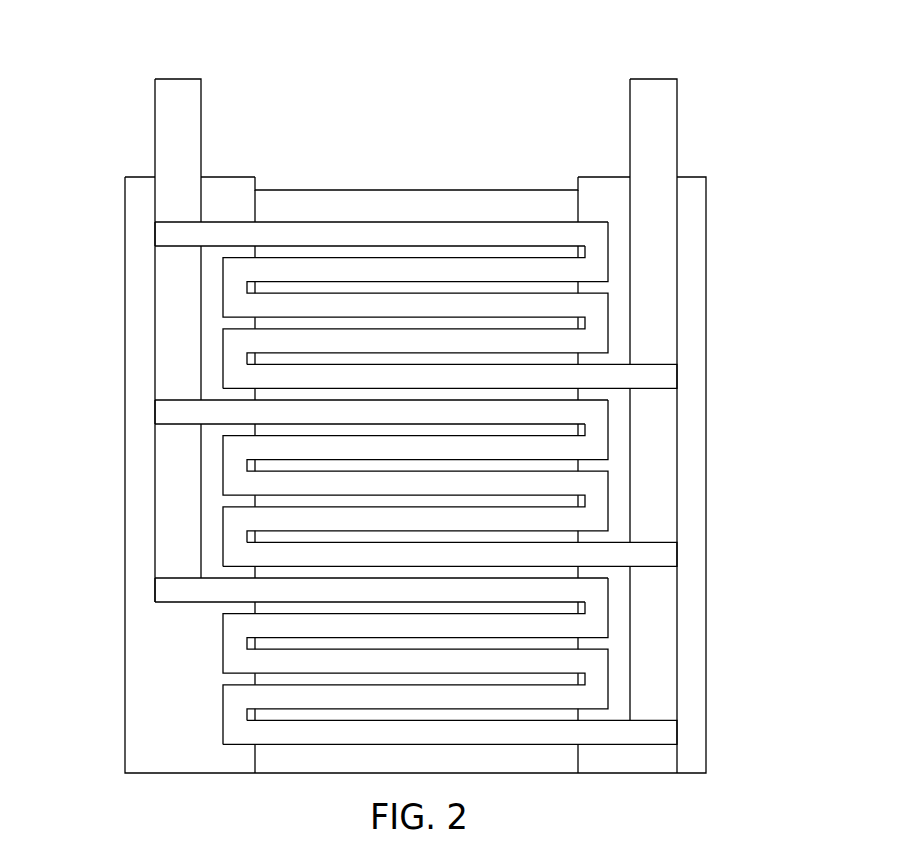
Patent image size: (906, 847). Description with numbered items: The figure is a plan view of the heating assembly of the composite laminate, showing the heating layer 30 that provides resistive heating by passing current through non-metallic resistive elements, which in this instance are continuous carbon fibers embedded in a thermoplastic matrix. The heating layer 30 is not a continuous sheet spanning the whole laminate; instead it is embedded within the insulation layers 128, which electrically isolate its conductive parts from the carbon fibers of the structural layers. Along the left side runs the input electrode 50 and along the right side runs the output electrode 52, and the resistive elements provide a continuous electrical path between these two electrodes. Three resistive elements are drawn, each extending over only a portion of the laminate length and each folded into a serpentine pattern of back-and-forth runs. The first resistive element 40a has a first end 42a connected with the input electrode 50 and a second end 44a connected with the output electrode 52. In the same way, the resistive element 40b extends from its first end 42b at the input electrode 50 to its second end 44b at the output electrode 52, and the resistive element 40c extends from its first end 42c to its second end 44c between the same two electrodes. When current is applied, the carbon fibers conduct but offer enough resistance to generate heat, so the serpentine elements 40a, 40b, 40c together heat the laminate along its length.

The heating layer 30 is at (722, 199).
The input electrode 50 is at (181, 78).
The output electrode 52 is at (653, 78).
The insulation layer 128 is at (227, 177).
The first end of resistive element 42c is at (162, 233).
The resistive element 40c is at (603, 321).
The second end of resistive element 44c is at (672, 376).
The first end of resistive element 42b is at (162, 411).
The resistive element 40b is at (603, 499).
The second end of resistive element 44b is at (672, 554).
The first end of first resistive element 42a is at (162, 589).
The first resistive element 40a is at (603, 677).
The second end of first resistive element 44a is at (672, 732).